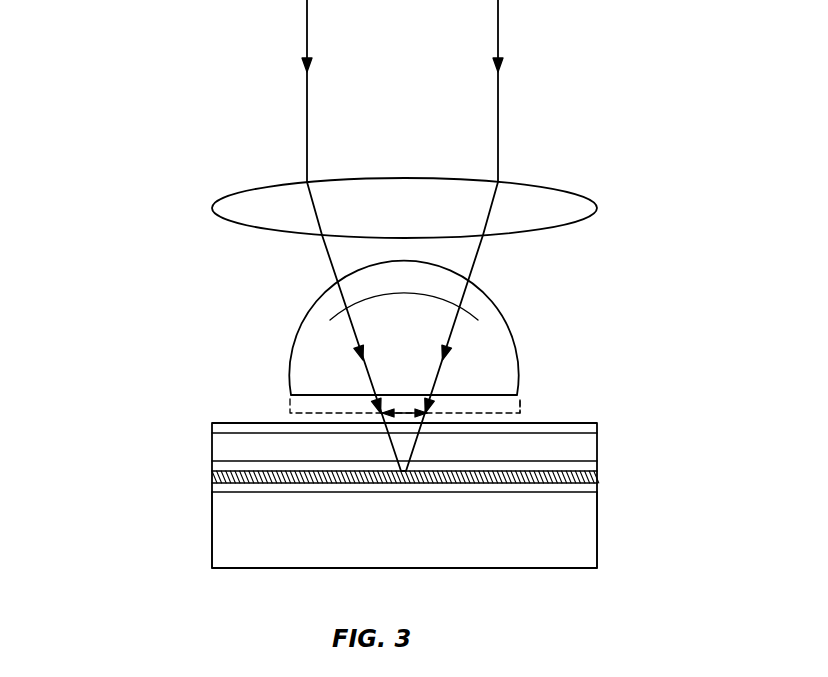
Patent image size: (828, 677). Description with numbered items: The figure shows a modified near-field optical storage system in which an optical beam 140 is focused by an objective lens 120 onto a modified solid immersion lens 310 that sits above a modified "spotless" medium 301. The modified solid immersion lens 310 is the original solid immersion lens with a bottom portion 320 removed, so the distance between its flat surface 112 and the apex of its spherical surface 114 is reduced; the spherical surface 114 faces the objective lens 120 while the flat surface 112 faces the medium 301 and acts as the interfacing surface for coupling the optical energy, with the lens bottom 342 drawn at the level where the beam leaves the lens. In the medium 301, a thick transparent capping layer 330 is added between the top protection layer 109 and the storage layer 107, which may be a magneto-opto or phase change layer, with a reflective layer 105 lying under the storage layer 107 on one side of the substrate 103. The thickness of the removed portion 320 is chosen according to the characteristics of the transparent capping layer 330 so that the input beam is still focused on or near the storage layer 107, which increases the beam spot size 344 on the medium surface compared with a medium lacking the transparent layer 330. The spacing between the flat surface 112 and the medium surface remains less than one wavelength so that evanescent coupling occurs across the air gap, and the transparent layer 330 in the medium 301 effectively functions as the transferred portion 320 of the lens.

The optical beam 140 is at (307, 3).
The objective lens 120 is at (545, 198).
The modified solid immersion lens 310 is at (322, 347).
The spherical surface 114 is at (370, 300).
The flat bottom surface of solid immersion lens 342 is at (404, 395).
The removed bottom portion 320 is at (290, 399).
The flat surface 112 is at (520, 400).
The beam spot size 344 is at (404, 418).
The modified spotless medium 301 is at (156, 502).
The top protection layer 109 is at (599, 423).
The transparent capping layer 330 is at (598, 441).
The storage layer 107 is at (598, 477).
The reflective layer 105 is at (598, 490).
The substrate 103 is at (566, 543).